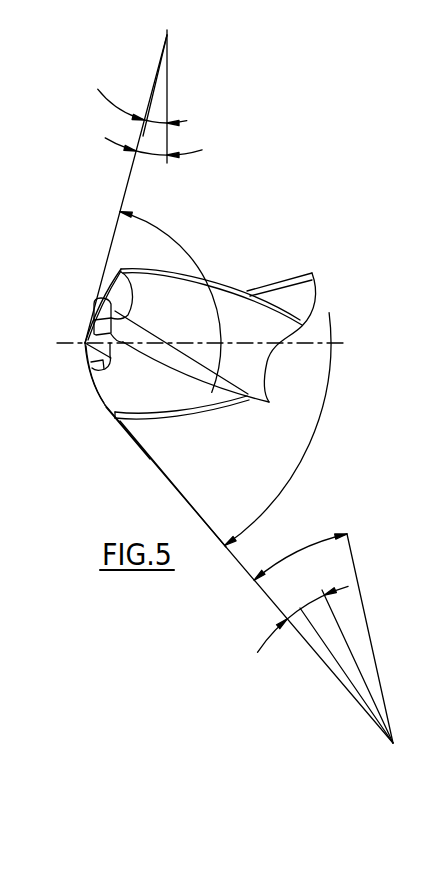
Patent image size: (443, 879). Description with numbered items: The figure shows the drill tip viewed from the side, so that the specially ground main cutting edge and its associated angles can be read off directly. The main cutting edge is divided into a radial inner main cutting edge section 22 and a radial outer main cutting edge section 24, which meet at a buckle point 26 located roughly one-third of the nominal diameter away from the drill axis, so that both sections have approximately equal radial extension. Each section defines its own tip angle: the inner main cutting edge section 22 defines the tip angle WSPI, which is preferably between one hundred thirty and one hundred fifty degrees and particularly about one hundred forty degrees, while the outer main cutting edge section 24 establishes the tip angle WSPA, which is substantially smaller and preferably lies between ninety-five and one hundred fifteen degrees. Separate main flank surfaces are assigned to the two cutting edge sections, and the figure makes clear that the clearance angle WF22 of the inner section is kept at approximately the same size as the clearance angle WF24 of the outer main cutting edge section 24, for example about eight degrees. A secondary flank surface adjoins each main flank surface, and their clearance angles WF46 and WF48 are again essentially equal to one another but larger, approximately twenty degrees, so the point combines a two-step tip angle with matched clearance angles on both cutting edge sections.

The radial inner main cutting edge section 22 is at (86, 340).
The radial outer main cutting edge section 24 is at (110, 410).
The buckle point 26 is at (98, 388).
The clearance angle of the inner main cutting edge section WF22 is at (140, 135).
The clearance angle of the secondary flank surface WF46 is at (150, 158).
The tip angle of the inner main cutting edge section WSPI is at (196, 266).
The tip angle of the outer main cutting edge section WSPA is at (314, 433).
The clearance angle of the secondary flank surface WF48 is at (303, 552).
The clearance angle of the outer main cutting edge section WF24 is at (345, 673).